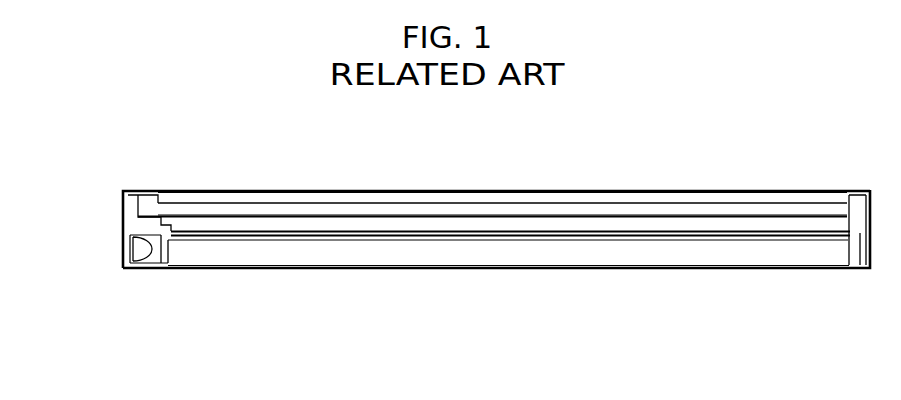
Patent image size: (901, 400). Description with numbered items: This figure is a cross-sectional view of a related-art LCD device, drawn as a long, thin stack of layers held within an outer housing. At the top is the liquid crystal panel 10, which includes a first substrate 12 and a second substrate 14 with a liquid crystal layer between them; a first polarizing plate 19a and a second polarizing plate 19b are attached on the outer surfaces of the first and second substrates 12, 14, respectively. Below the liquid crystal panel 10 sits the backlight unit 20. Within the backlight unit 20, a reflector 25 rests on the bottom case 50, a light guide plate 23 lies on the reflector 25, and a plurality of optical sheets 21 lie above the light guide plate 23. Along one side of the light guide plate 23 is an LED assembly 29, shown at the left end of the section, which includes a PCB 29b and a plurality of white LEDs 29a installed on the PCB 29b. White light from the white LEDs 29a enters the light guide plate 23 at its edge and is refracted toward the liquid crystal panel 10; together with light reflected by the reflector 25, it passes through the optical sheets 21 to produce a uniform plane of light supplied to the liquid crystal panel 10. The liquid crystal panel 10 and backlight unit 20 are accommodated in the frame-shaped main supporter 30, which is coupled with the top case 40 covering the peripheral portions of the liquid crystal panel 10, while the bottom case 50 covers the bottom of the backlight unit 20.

The liquid crystal panel 10 is at (492, 156).
The first substrate 12 is at (518, 214).
The second substrate 14 is at (477, 203).
The first polarizing plate 19a is at (675, 214).
The second polarizing plate 19b is at (638, 190).
The backlight unit 20 is at (475, 308).
The optical sheets 21 is at (235, 243).
The light guide plate 23 is at (201, 256).
The reflector 25 is at (268, 262).
The LED assembly 29 is at (135, 294).
The white LEDs 29a is at (146, 270).
The PCB 29b is at (124, 270).
The main supporter 30 is at (121, 211).
The top case 40 is at (833, 190).
The bottom case 50 is at (408, 270).